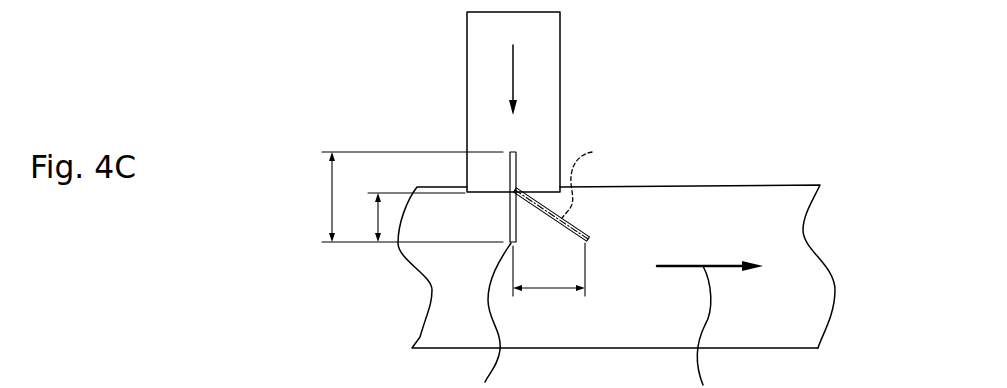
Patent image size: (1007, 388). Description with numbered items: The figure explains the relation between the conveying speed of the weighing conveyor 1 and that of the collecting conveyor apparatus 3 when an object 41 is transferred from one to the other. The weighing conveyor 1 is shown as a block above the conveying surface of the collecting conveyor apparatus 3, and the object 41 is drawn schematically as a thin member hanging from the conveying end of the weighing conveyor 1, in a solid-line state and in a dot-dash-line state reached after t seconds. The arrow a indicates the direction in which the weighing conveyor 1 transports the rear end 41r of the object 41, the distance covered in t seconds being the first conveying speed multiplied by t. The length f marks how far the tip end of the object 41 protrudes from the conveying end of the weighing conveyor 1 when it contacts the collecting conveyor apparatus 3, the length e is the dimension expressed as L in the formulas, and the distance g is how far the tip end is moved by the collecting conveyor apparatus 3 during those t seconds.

The weighing conveyor 1 is at (560, 35).
The arrow a is at (513, 76).
The rear end 41r is at (516, 150).
The object 41 is at (516, 172).
The collecting conveyor apparatus 3 is at (440, 302).
The length e is at (407, 197).
The length f is at (413, 217).
The distance g is at (549, 275).